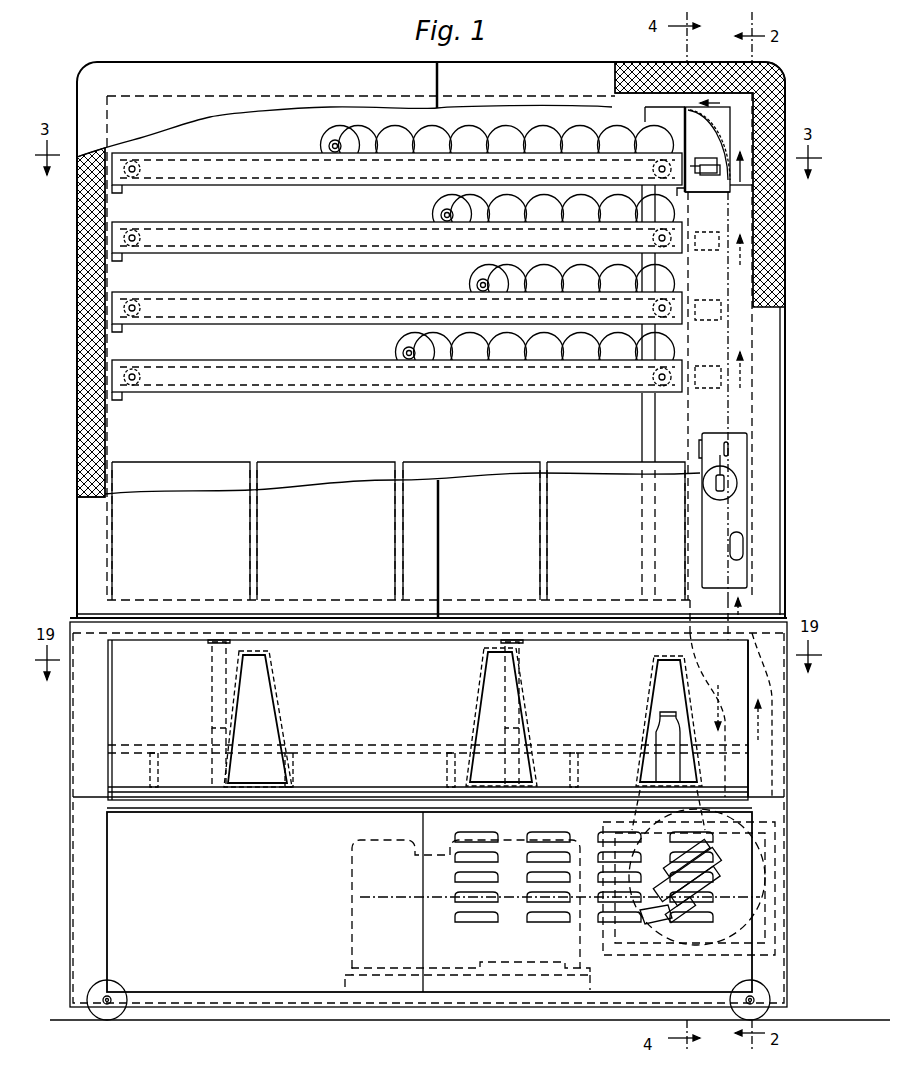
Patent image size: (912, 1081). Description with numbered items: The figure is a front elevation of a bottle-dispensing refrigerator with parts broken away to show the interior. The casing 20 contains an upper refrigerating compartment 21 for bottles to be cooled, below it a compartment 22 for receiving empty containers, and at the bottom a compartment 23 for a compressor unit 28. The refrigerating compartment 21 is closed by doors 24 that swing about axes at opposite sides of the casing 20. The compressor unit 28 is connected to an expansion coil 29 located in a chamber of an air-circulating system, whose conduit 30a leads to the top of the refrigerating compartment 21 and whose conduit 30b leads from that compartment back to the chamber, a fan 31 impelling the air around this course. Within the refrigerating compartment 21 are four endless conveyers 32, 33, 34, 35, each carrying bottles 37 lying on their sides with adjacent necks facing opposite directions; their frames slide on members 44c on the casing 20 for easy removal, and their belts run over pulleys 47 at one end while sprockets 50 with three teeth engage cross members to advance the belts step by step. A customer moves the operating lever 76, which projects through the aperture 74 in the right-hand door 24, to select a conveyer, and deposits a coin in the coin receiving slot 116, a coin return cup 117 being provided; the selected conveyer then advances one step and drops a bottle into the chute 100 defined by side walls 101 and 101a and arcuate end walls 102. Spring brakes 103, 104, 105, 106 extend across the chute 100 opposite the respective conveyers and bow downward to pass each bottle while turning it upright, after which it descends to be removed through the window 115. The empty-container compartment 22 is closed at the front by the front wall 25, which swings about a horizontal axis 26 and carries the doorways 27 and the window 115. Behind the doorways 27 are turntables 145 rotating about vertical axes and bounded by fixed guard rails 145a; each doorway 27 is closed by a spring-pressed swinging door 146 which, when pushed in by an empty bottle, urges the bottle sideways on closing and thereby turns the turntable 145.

The casing 20 is at (780, 275).
The refrigerating compartment 21 is at (222, 135).
The empty-container compartment 22 is at (150, 700).
The compressor compartment 23 is at (125, 885).
The doors 24 is at (448, 78).
The front wall 25 is at (150, 672).
The horizontal axis 26 is at (118, 797).
The doorways 27 is at (265, 692).
The compressor unit 28 is at (365, 876).
The expansion coil 29 is at (725, 870).
The conduit 30a is at (770, 715).
The conduit 30b is at (735, 748).
The fan 31 is at (745, 893).
The endless conveyer 32 is at (186, 183).
The endless conveyer 33 is at (186, 252).
The endless conveyer 34 is at (210, 322).
The endless conveyer 35 is at (238, 392).
The bottles 37 is at (447, 338).
The frame supporting members 44c is at (118, 262).
The pulleys 47 is at (132, 182).
The sprockets 50 is at (655, 273).
The aperture 74 is at (720, 433).
The operating lever 76 is at (722, 483).
The chute 100 is at (683, 117).
The side wall 101 is at (728, 143).
The side wall 101a is at (704, 213).
The end walls 102 is at (706, 189).
The spring brake 103 is at (753, 188).
The spring brake 104 is at (708, 257).
The spring brake 105 is at (710, 328).
The spring brake 106 is at (738, 378).
The window 115 is at (660, 680).
The coin receiving slot 116 is at (728, 455).
The coin return cup 117 is at (745, 548).
The turntables 145 is at (290, 752).
The guard rail 145a is at (130, 745).
The swinging door 146 is at (263, 720).